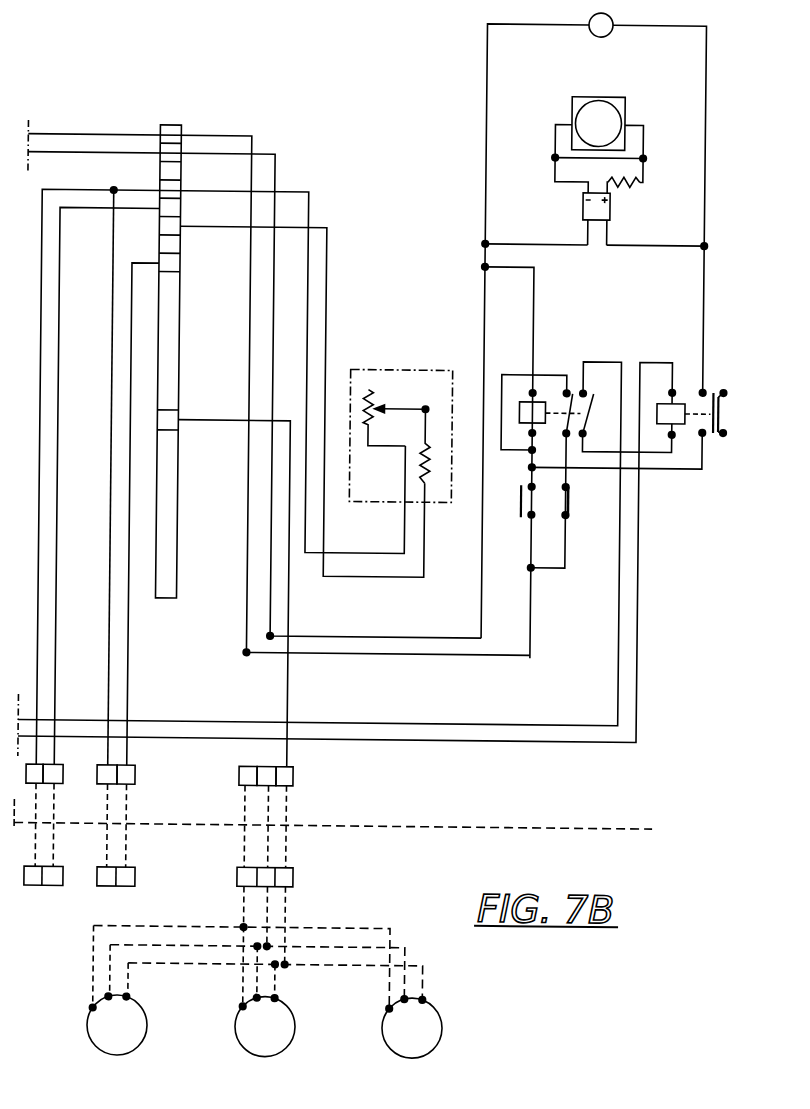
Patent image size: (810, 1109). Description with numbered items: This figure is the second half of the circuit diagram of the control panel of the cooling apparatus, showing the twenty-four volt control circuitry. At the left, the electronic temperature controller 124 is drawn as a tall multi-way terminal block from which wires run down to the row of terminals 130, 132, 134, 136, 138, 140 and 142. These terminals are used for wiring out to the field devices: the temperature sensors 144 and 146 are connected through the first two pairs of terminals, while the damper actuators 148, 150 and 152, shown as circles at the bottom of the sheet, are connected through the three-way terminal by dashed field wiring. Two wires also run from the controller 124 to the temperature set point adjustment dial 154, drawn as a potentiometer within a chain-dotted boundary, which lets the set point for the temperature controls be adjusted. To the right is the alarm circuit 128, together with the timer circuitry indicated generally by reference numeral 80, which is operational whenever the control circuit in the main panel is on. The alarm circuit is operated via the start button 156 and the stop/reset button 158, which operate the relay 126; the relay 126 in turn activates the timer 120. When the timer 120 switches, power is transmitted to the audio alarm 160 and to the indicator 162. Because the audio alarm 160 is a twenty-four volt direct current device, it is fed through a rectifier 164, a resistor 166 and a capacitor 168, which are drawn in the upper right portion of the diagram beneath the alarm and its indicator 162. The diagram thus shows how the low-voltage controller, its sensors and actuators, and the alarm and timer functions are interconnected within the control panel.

The timer circuitry 80 is at (652, 484).
The timer 120 is at (702, 424).
The electronic temperature controller 124 is at (176, 127).
The relay 126 is at (538, 370).
The alarm circuit 128 is at (482, 138).
The terminal 130 is at (40, 771).
The terminal 132 is at (65, 777).
The terminal 134 is at (112, 772).
The terminal 136 is at (137, 780).
The terminal 138 is at (241, 777).
The terminal 140 is at (280, 769).
The terminal 142 is at (295, 778).
The temperature sensor 144 is at (36, 889).
The temperature sensor 146 is at (138, 877).
The damper actuator 148 is at (115, 1058).
The damper actuator 150 is at (244, 1050).
The damper actuator 152 is at (388, 1052).
The temperature set point adjustment dial 154 is at (406, 376).
The start button 156 is at (519, 501).
The stop/reset button 158 is at (568, 501).
The audio alarm 160 is at (630, 82).
The indicator 162 is at (585, 20).
The rectifier 164 is at (603, 210).
The resistor 166 is at (632, 178).
The capacitor 168 is at (626, 156).